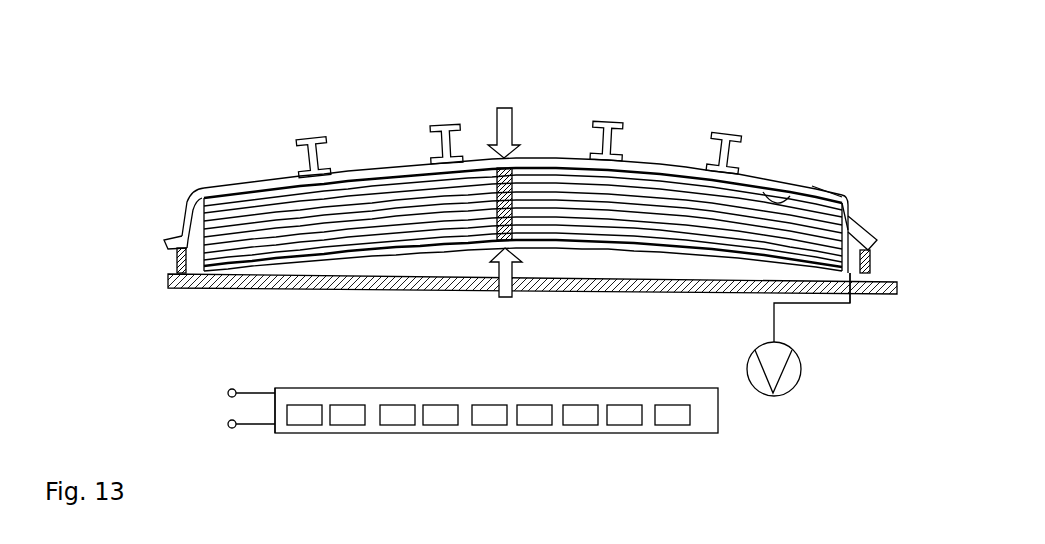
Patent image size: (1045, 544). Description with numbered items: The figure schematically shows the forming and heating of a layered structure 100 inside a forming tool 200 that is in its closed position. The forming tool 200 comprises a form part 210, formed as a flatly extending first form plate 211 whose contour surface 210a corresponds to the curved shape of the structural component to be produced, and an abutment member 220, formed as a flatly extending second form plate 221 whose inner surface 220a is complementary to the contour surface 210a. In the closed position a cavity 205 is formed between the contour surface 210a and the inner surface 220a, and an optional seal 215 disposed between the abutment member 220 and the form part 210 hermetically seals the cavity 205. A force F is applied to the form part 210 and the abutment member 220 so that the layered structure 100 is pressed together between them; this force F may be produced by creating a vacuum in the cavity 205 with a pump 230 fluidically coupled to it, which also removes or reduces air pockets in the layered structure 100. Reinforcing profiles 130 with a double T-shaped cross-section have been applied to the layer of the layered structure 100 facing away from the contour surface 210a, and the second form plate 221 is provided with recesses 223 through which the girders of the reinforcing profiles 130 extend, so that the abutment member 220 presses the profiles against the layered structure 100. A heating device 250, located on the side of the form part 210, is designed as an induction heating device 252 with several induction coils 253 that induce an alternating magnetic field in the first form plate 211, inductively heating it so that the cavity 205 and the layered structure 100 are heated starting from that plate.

The layered structure 100 is at (847, 225).
The reinforcing profiles 130 is at (438, 128).
The forming tool 200 is at (147, 178).
The cavity 205 is at (853, 257).
The form part 210 is at (322, 277).
The contour surface 210a is at (262, 256).
The first form plate 211 is at (668, 258).
The seal 215 is at (177, 258).
The abutment member 220 is at (236, 186).
The inner surface 220a is at (785, 205).
The second form plate 221 is at (812, 185).
The recesses 223 is at (288, 177).
The pump 230 is at (787, 404).
The heating device 250 is at (695, 440).
The induction heating device 252 is at (318, 440).
The induction coils 253 is at (447, 425).
The force F is at (520, 281).